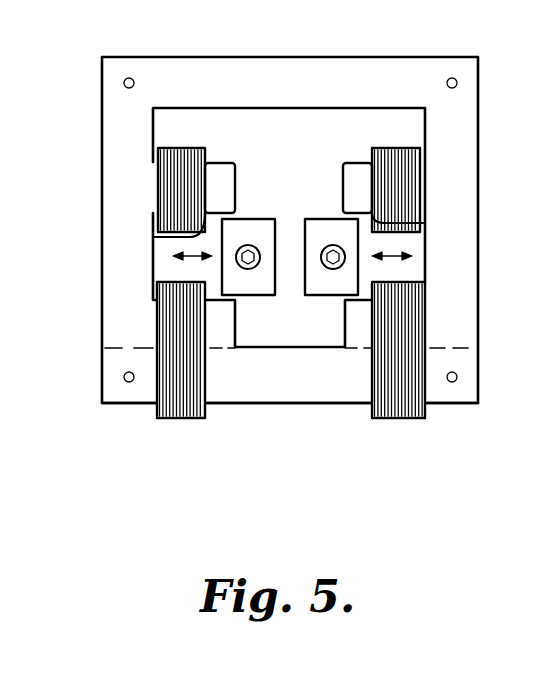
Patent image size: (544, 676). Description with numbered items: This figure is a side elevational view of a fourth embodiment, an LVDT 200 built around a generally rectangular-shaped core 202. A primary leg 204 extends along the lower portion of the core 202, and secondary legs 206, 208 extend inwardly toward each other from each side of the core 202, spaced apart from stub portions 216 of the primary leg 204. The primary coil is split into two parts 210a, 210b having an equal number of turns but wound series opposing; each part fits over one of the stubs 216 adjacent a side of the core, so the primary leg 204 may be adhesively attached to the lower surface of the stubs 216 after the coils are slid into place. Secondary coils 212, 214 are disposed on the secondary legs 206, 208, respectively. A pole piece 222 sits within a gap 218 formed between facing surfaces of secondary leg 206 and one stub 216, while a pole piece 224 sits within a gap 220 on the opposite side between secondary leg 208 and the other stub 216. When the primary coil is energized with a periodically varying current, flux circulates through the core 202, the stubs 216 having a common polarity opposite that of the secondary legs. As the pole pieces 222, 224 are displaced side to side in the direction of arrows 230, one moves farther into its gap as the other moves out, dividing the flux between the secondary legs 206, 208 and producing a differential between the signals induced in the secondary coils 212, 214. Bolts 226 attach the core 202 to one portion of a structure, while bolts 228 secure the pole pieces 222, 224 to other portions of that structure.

The LVDT 200 is at (130, 424).
The core 202 is at (110, 327).
The primary leg 204 is at (326, 393).
The secondary leg 206 is at (222, 163).
The secondary leg 208 is at (352, 163).
The primary coil part 210a is at (183, 418).
The primary coil part 210b is at (410, 418).
The secondary coil 212 is at (168, 194).
The secondary coil 214 is at (403, 190).
The stub portion 216 is at (342, 331).
The gap 218 is at (153, 237).
The gap 220 is at (375, 219).
The pole piece 222 is at (258, 219).
The pole piece 224 is at (322, 219).
The bolts 226 is at (124, 83).
The bolts 228 is at (248, 269).
The arrows 230 is at (190, 258).